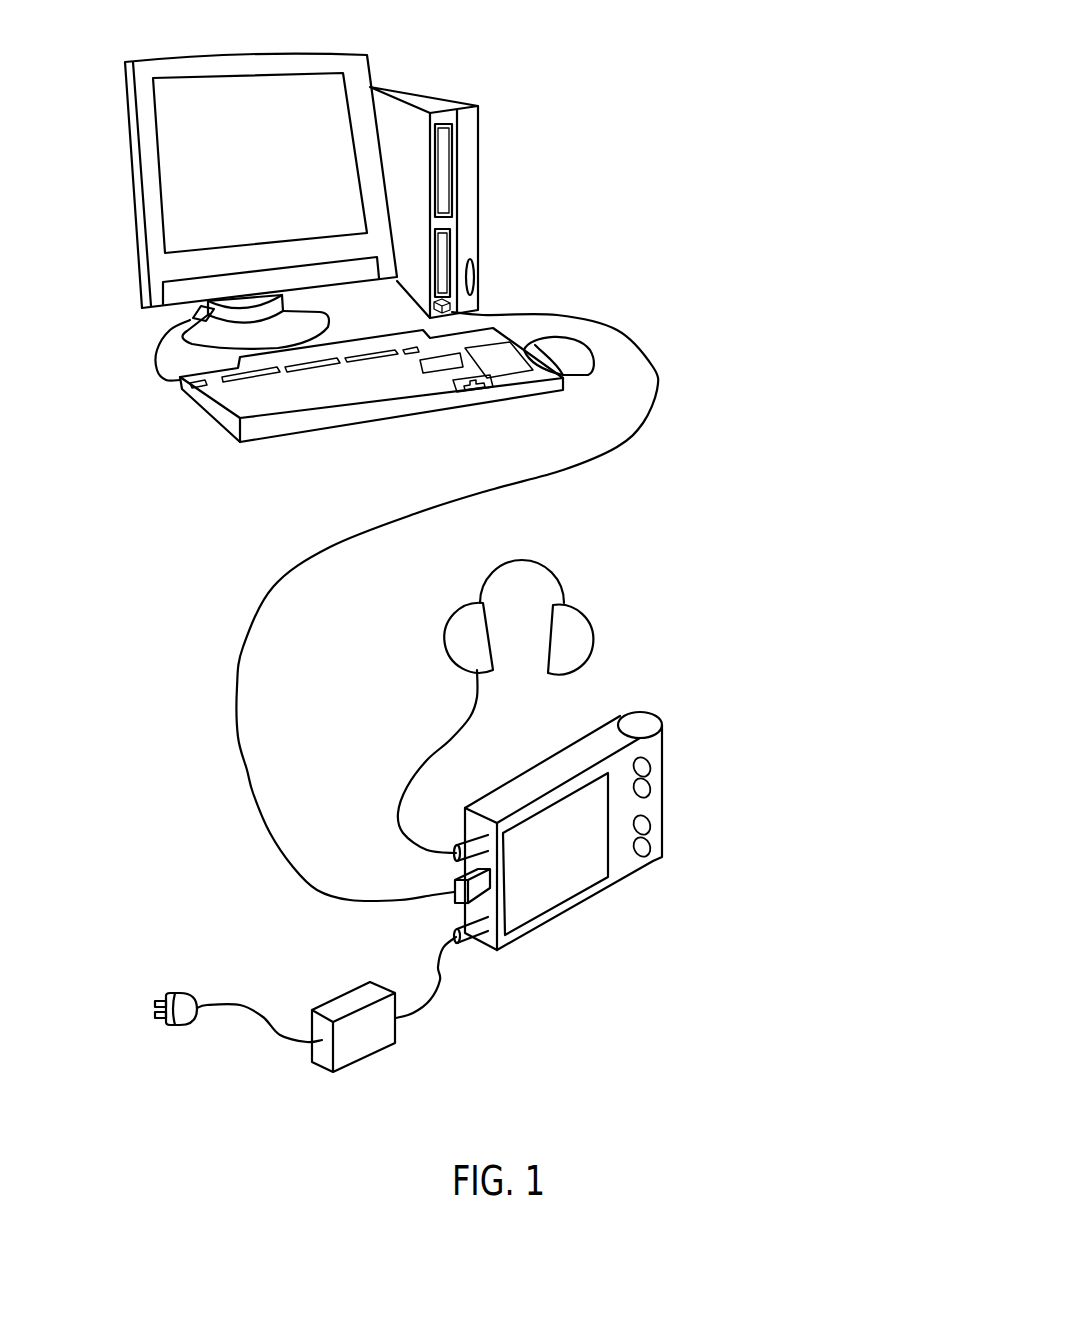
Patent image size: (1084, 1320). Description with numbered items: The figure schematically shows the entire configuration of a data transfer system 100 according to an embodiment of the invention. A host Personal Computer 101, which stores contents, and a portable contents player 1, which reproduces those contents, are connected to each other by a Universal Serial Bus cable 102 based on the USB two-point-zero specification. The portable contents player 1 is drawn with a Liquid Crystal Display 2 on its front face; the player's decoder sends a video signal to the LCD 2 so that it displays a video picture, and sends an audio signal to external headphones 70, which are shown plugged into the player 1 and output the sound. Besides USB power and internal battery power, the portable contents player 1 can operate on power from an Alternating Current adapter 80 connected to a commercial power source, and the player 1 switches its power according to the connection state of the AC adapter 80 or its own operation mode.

The data transfer system 100 is at (800, 100).
The host Personal Computer (PC) 101 is at (530, 186).
The Universal Serial Bus (USB) cable 102 is at (593, 453).
The headphones 70 is at (583, 620).
The portable contents player 1 is at (704, 844).
The Liquid Crystal Display (LCD) 2 is at (578, 887).
The Alternating Current (AC) adapter 80 is at (367, 1048).